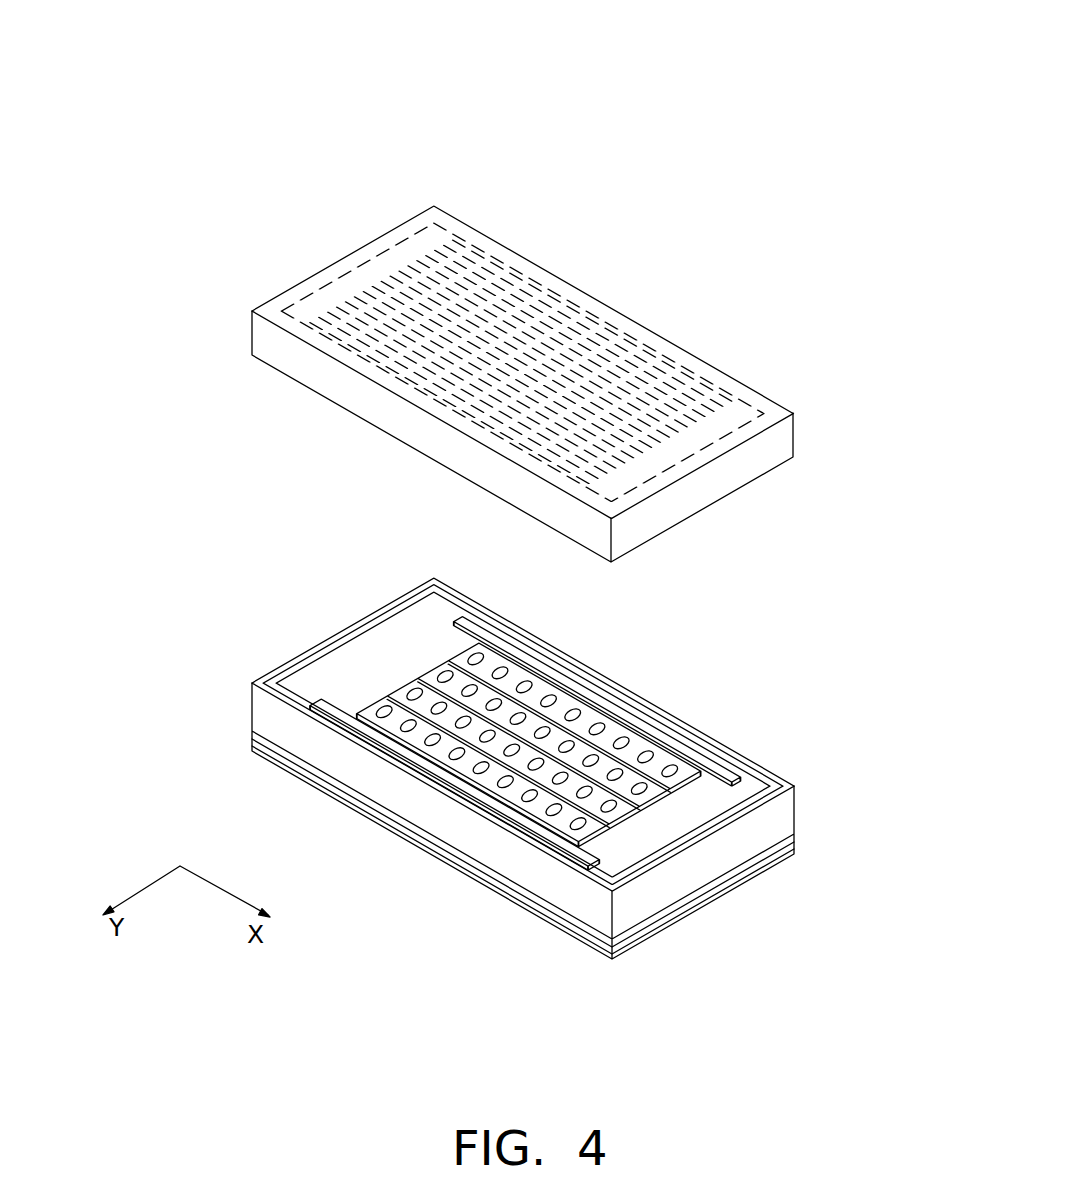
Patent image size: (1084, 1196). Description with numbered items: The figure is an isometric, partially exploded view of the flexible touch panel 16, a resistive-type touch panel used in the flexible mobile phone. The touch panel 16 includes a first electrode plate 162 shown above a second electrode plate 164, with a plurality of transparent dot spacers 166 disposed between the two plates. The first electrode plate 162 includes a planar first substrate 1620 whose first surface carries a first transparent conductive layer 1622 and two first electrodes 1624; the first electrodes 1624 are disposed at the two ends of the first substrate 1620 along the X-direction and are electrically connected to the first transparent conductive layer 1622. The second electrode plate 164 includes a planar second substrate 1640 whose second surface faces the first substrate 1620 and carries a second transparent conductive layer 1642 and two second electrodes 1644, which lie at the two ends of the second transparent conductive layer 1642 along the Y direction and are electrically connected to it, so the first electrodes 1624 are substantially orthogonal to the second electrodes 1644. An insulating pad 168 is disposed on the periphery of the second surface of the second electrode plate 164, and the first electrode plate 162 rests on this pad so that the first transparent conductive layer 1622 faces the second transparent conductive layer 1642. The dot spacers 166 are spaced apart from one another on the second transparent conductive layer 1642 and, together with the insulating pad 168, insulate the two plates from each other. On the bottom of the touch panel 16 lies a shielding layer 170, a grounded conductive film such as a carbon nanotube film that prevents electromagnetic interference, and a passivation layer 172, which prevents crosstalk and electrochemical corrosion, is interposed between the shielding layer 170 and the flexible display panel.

The flexible touch panel 16 is at (553, 75).
The first electrode plate 162 is at (716, 334).
The first substrate 1620 is at (778, 442).
The first transparent conductive layer 1622 is at (535, 305).
The first electrodes 1624 is at (368, 258).
The second electrode plate 164 is at (694, 922).
The second substrate 1640 is at (487, 853).
The second transparent conductive layer 1642 is at (410, 675).
The second electrodes 1644 is at (573, 682).
The transparent dot spacers 166 is at (664, 770).
The insulating pad 168 is at (417, 783).
The shielding layer 170 is at (253, 748).
The passivation layer 172 is at (297, 776).